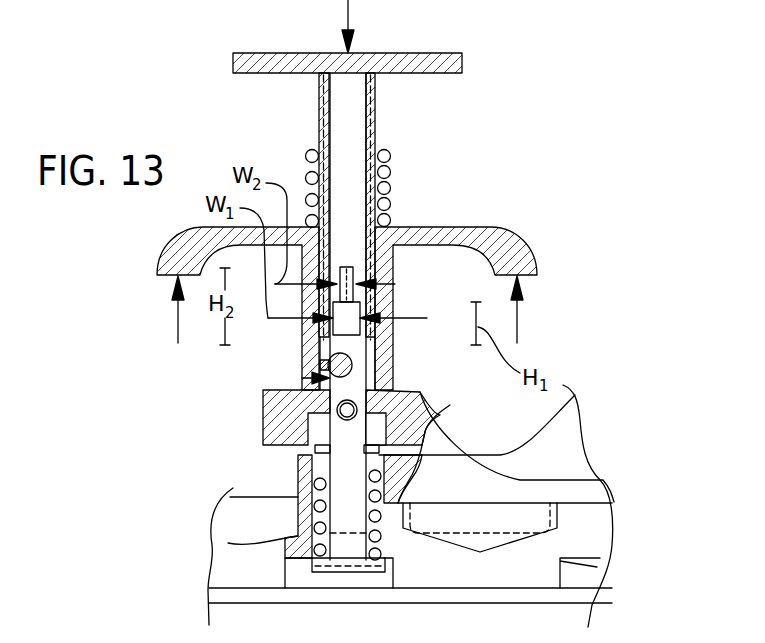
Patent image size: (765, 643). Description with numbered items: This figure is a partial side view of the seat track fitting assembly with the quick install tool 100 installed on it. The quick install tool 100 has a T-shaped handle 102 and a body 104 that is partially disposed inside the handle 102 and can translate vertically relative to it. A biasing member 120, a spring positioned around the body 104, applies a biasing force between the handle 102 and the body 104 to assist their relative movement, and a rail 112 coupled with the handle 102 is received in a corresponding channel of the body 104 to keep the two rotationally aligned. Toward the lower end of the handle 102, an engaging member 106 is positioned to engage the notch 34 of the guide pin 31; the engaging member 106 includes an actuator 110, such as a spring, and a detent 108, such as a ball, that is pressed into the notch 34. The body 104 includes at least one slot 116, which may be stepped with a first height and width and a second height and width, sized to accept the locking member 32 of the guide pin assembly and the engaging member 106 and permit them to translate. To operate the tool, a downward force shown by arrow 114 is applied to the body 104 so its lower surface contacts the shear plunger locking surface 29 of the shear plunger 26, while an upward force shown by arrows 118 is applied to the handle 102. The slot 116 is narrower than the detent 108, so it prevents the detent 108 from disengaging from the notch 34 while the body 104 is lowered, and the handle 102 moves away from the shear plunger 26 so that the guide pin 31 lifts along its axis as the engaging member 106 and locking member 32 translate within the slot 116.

The quick install tool 100 is at (554, 165).
The handle 102 is at (520, 262).
The body 104 is at (458, 61).
The engaging member 106 is at (302, 378).
The detent 108 is at (352, 358).
The actuator 110 is at (318, 362).
The rail 112 is at (346, 267).
The arrow 114 is at (350, 0).
The slot 116 is at (350, 308).
The arrows 118 is at (177, 320).
The biasing member 120 is at (389, 188).
The shear plunger 26 is at (300, 437).
The shear plunger locking surface 29 is at (262, 388).
The guide pin 31 is at (345, 495).
The locking member 32 is at (337, 410).
The notch 34 is at (356, 374).